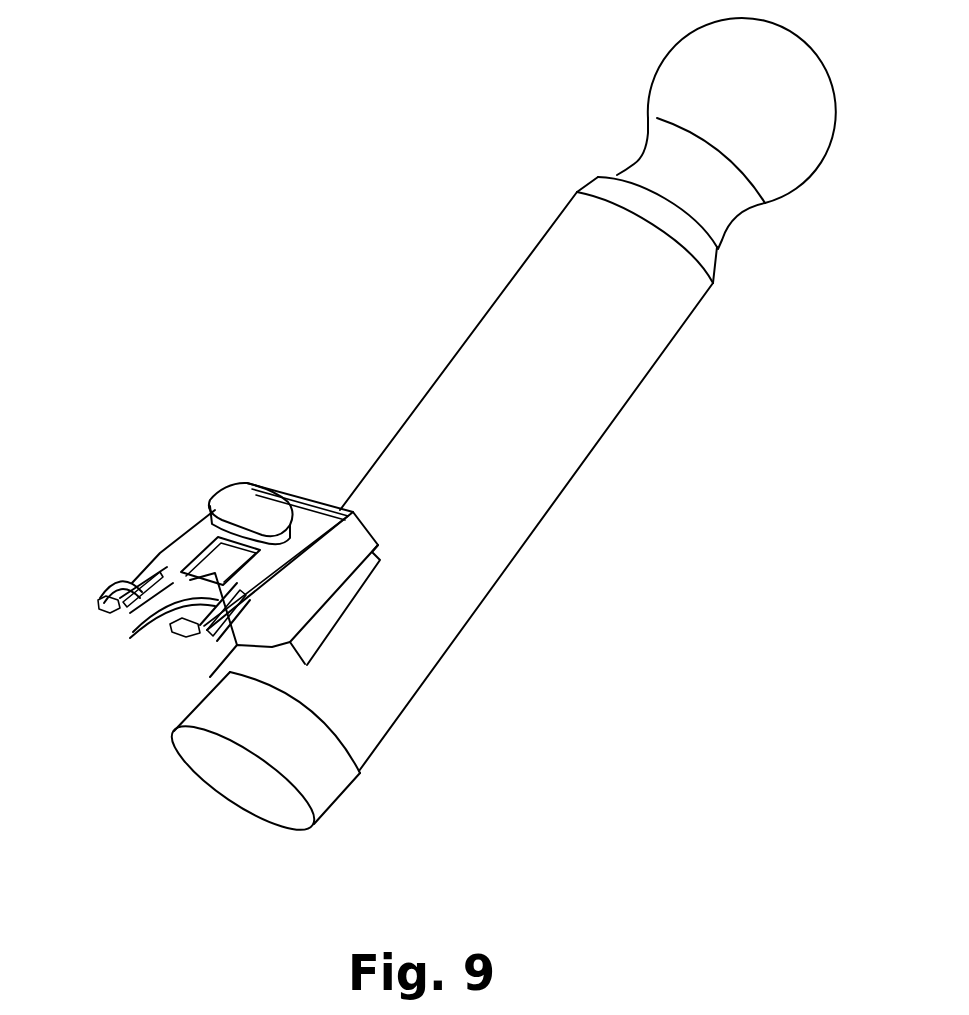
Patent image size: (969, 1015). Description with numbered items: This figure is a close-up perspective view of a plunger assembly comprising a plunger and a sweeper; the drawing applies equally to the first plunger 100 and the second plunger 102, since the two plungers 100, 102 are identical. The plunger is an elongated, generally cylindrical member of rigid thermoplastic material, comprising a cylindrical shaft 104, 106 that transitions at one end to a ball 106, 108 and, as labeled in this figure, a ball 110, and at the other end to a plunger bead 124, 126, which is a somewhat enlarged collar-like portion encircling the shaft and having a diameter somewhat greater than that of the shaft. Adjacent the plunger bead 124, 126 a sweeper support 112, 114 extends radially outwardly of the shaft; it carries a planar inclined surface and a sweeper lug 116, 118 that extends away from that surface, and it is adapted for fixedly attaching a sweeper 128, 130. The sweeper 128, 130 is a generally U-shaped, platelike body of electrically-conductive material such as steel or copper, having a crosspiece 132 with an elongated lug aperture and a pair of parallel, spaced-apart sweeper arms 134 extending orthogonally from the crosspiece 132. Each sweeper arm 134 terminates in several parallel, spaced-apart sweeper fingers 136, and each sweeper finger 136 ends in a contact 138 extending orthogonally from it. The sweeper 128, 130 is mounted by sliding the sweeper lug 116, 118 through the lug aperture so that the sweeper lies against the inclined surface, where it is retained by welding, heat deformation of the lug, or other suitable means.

The first plunger 100 is at (456, 437).
The second plunger 102 is at (422, 304).
The first shaft 104 is at (552, 474).
The first ball 106 is at (752, 157).
The second ball 108 is at (615, 363).
The ball knob 110 is at (787, 135).
The first sweeper support 112 is at (377, 609).
The second sweeper support 114 is at (317, 577).
The first sweeper lug 116 is at (230, 452).
The second sweeper lug 118 is at (243, 502).
The first plunger bead 124 is at (332, 763).
The second plunger bead 126 is at (323, 762).
The first sweeper 128 is at (180, 503).
The second sweeper 130 is at (203, 533).
The crosspiece 132 is at (318, 518).
The sweeper arms 134 is at (170, 555).
The sweeper fingers 136 is at (137, 595).
The contacts 138 is at (130, 596).